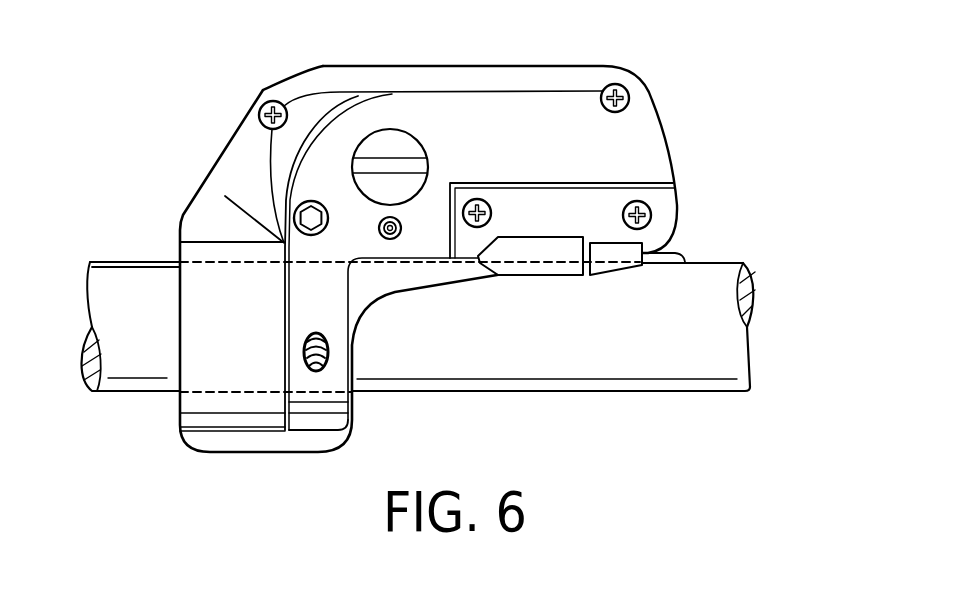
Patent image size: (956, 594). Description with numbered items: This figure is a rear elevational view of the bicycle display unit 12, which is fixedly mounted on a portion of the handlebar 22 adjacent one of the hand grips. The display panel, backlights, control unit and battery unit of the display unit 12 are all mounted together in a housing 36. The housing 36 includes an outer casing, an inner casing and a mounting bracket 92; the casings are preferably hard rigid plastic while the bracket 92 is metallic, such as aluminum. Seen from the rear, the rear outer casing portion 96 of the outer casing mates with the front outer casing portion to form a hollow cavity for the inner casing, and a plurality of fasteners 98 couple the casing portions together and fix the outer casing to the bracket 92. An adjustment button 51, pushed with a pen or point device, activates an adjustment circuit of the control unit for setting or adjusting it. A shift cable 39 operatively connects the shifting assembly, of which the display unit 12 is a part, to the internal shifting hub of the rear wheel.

The bicycle display unit 12 is at (723, 95).
The handlebar 22 is at (553, 393).
The housing 36 is at (669, 149).
The shift cable 39 is at (680, 250).
The adjustment button 51 is at (400, 223).
The mounting bracket 92 is at (441, 259).
The rear outer casing portion 96 is at (222, 163).
The fasteners 98 is at (278, 102).